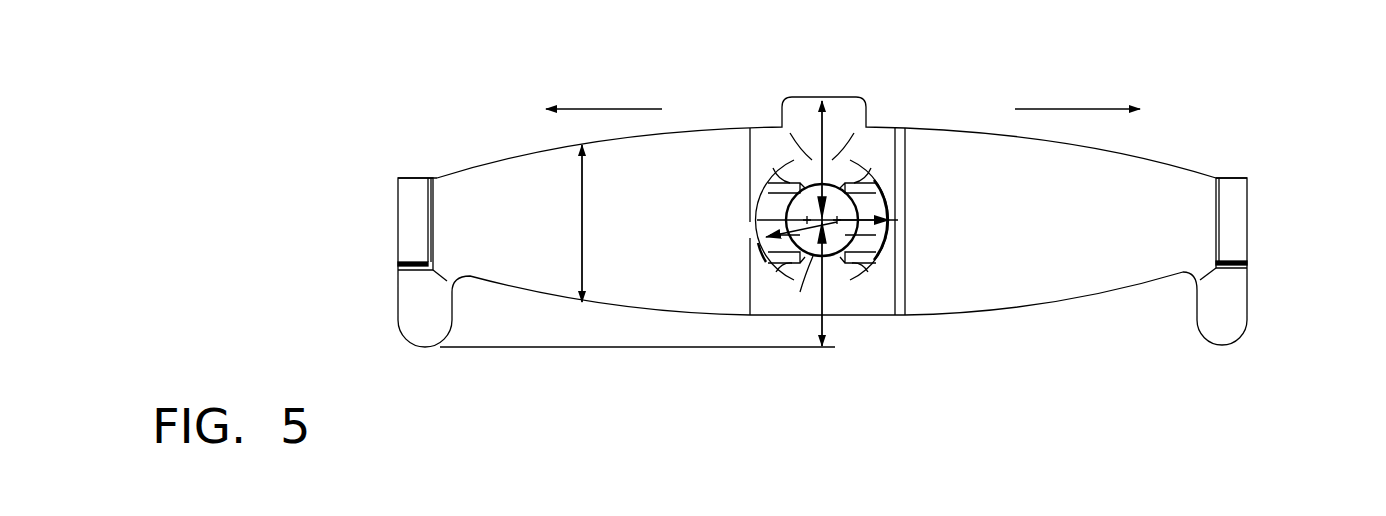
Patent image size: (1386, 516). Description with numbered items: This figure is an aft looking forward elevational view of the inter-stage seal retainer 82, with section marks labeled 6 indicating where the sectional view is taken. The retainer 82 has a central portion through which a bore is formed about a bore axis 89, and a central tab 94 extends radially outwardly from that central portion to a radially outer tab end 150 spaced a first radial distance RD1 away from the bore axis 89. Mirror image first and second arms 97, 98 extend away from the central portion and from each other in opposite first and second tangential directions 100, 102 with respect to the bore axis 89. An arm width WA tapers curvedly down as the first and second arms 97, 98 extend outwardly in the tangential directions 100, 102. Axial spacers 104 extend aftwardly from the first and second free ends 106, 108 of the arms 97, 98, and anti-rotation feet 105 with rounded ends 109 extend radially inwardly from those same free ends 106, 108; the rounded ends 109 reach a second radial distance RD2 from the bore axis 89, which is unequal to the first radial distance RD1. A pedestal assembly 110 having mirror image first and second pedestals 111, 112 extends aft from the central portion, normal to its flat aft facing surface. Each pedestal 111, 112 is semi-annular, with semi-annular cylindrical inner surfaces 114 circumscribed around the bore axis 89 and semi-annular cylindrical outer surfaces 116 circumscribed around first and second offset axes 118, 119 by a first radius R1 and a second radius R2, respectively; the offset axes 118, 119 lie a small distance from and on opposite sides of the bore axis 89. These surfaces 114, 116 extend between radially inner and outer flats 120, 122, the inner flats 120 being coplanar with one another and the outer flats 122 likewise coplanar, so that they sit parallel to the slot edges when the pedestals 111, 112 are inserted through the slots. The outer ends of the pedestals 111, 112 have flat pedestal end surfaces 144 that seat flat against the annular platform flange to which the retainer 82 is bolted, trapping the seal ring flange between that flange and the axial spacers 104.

The inter-stage seal retainer 82 is at (1128, 345).
The bore axis 89 is at (815, 247).
The central tab 94 is at (840, 105).
The first arm 97 is at (536, 148).
The second arm 98 is at (1102, 148).
The first tangential direction 100 is at (600, 109).
The second tangential direction 102 is at (1076, 109).
The axial spacers 104 is at (430, 235).
The anti-rotation feet 105 is at (418, 322).
The first free end 106 is at (420, 178).
The second free end 108 is at (1230, 178).
The rounded ends 109 is at (420, 347).
The pedestal assembly 110 is at (910, 188).
The first pedestal 111 is at (775, 221).
The second pedestal 112 is at (888, 245).
The semi-annular cylindrical inner surfaces 114 is at (790, 133).
The semi-annular cylindrical outer surfaces 116 is at (768, 236).
The first offset axis 118 is at (785, 200).
The second offset axis 119 is at (890, 315).
The radially inner flats 120 is at (786, 264).
The radially outer flats 122 is at (785, 183).
The flat pedestal end surfaces 144 is at (778, 250).
The radially outer tab end 150 is at (858, 100).
The first radius R1 is at (807, 220).
The second radius R2 is at (905, 212).
The first radial distance RD1 is at (818, 135).
The second radial distance RD2 is at (835, 240).
The arm width WA is at (588, 232).
The section line 6- 6 is at (337, 84).